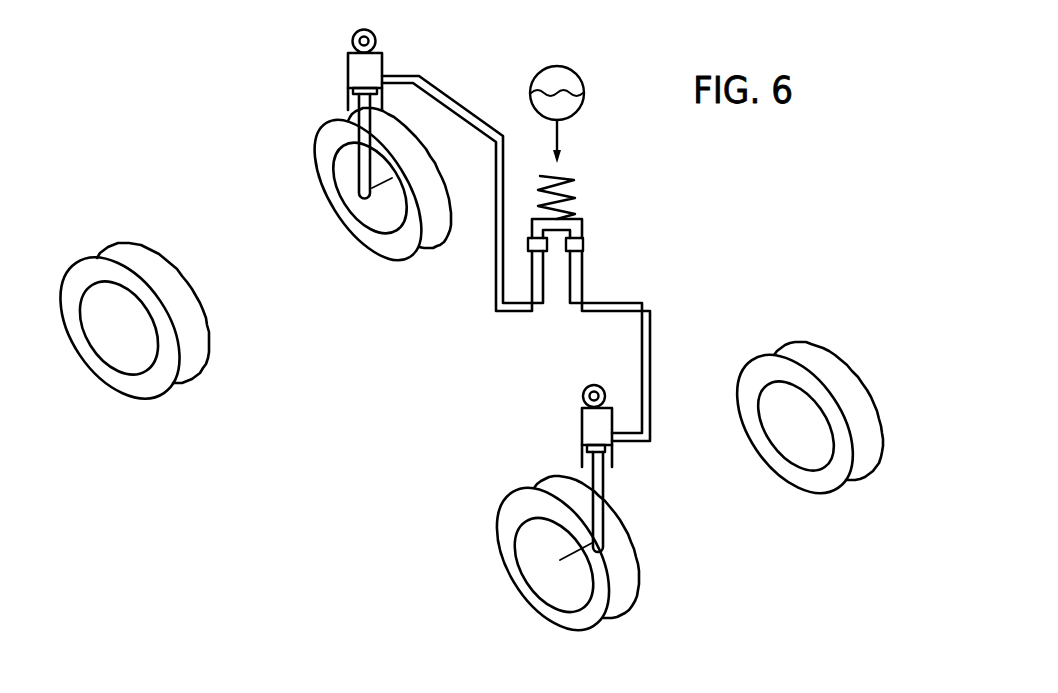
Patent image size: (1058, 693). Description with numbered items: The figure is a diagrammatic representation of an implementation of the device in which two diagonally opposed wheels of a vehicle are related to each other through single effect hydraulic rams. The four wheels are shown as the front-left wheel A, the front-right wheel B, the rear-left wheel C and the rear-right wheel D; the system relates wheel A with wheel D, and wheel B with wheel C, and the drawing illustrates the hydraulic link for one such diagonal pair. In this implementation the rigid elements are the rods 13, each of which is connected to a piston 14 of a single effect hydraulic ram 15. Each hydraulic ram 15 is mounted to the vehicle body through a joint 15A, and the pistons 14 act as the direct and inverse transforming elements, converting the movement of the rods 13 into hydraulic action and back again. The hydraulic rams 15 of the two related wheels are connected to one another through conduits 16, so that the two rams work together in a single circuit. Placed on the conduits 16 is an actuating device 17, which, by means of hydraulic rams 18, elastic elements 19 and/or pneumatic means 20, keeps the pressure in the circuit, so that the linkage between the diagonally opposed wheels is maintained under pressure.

The rod 13 is at (362, 170).
The piston 14 is at (353, 90).
The single effect hydraulic ram 15 is at (372, 63).
The joint 15A is at (352, 41).
The conduit 16 is at (500, 273).
The actuating device 17 is at (598, 211).
The hydraulic ram 18 is at (575, 262).
The elastic element 19 is at (562, 177).
The pneumatic means 20 is at (567, 82).
The front-left wheel A is at (198, 354).
The front-right wheel B is at (392, 248).
The rear-left wheel C is at (632, 590).
The rear-right wheel D is at (841, 483).